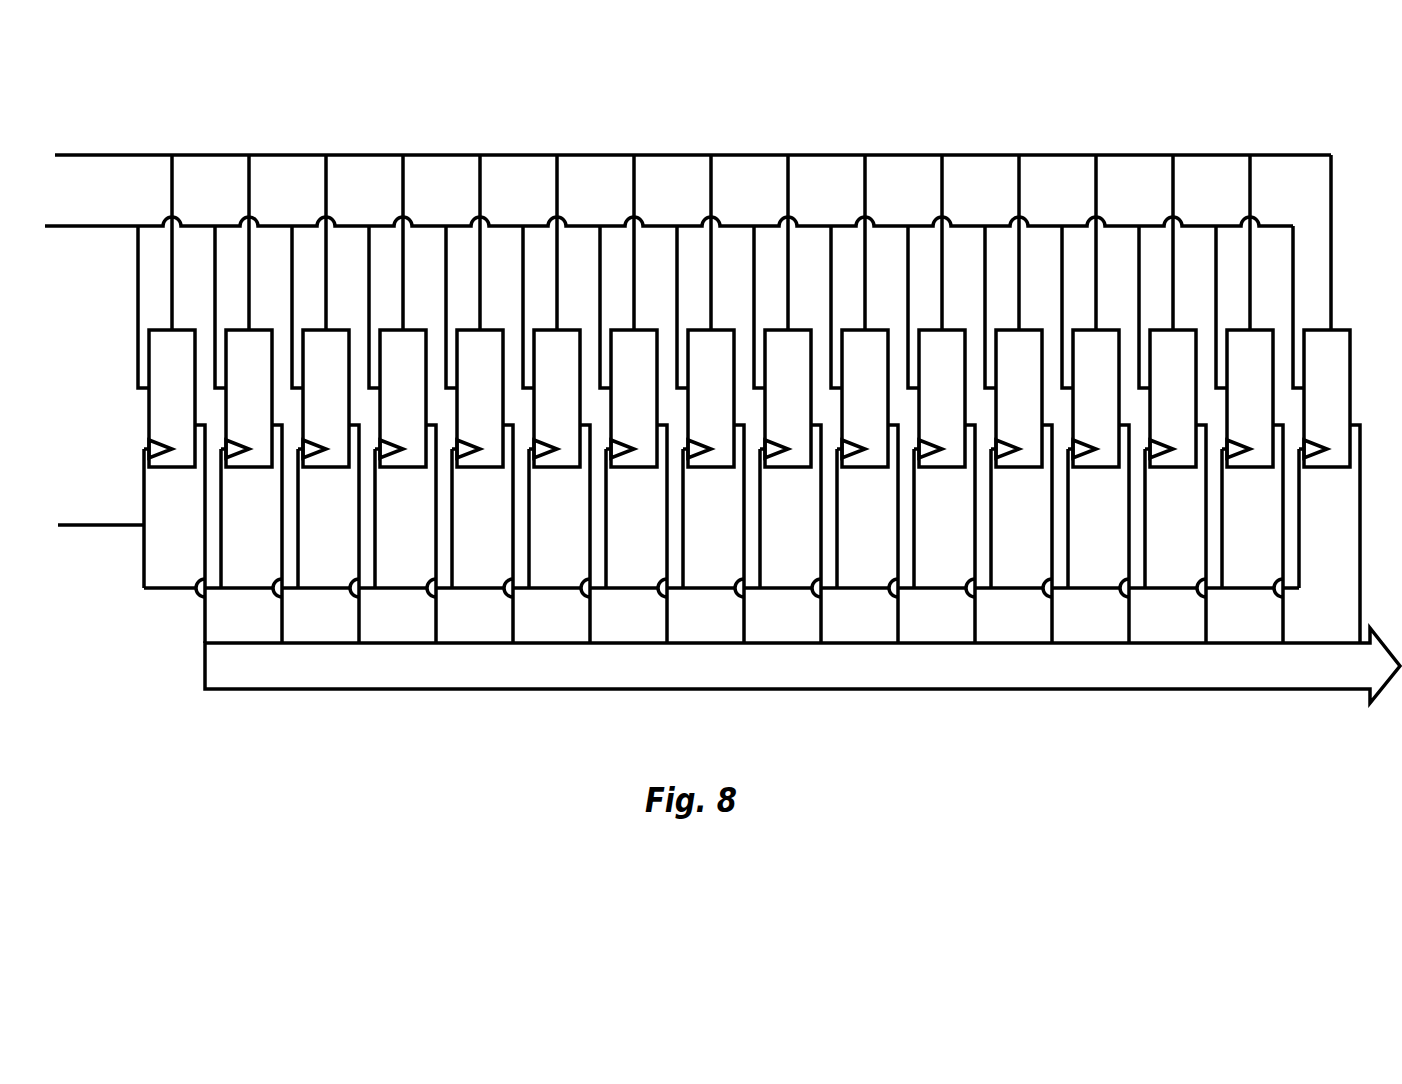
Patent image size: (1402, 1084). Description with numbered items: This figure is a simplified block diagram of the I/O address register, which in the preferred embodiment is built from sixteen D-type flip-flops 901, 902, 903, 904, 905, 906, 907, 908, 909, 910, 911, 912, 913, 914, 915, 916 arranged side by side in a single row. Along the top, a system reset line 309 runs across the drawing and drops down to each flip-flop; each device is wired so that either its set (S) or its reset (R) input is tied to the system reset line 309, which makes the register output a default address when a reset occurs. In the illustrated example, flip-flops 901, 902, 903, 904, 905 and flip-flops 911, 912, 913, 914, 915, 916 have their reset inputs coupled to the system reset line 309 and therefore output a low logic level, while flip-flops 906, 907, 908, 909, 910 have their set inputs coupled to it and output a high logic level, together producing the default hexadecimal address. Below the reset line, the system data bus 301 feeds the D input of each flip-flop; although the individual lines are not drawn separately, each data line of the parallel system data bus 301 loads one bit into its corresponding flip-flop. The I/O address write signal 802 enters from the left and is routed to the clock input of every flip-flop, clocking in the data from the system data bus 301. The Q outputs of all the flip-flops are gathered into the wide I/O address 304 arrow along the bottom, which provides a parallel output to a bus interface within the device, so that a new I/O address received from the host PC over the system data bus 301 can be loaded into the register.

The system reset line 309 is at (267, 155).
The system data bus 301 is at (88, 232).
The I/O address write signal 802 is at (88, 531).
The I/O address 304 is at (1316, 700).
The D-type flip-flop 901 is at (1326, 399).
The D-type flip-flop 902 is at (1249, 399).
The D-type flip-flop 903 is at (1172, 399).
The D-type flip-flop 904 is at (1095, 399).
The D-type flip-flop 905 is at (1018, 399).
The D-type flip-flop 906 is at (941, 399).
The D-type flip-flop 907 is at (864, 399).
The D-type flip-flop 908 is at (787, 399).
The D-type flip-flop 909 is at (710, 399).
The D-type flip-flop 910 is at (633, 399).
The D-type flip-flop 911 is at (556, 399).
The D-type flip-flop 912 is at (479, 399).
The D-type flip-flop 913 is at (402, 399).
The D-type flip-flop 914 is at (325, 399).
The D-type flip-flop 915 is at (248, 399).
The D-type flip-flop 916 is at (171, 399).